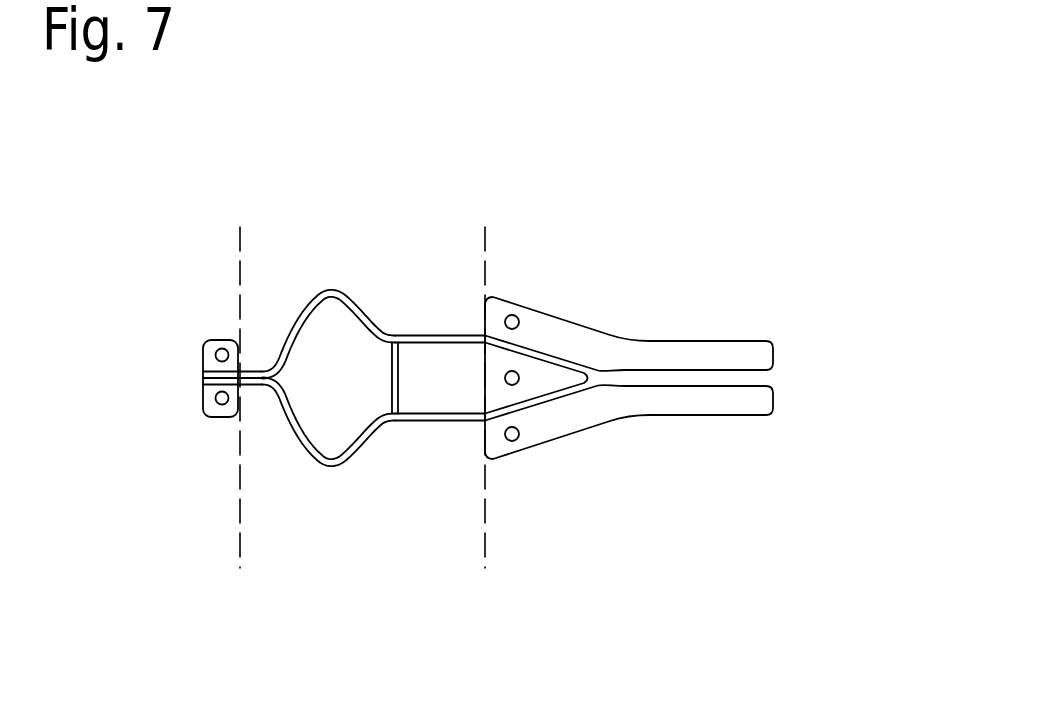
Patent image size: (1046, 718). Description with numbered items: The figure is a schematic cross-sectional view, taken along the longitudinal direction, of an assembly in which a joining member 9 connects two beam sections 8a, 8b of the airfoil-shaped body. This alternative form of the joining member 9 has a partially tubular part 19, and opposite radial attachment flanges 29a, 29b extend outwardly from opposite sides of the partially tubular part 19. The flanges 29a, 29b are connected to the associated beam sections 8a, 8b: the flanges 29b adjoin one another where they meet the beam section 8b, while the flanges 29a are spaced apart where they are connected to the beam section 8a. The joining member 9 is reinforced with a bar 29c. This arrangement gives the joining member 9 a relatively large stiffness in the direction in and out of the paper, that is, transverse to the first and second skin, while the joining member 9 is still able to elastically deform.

The beam section 8a is at (586, 342).
The beam section 8b is at (214, 340).
The joining member 9 is at (351, 325).
The partially tubular part 19 is at (376, 329).
The radial attachment flange 29a is at (442, 341).
The radial attachment flange 29b is at (261, 385).
The bar 29c is at (385, 398).